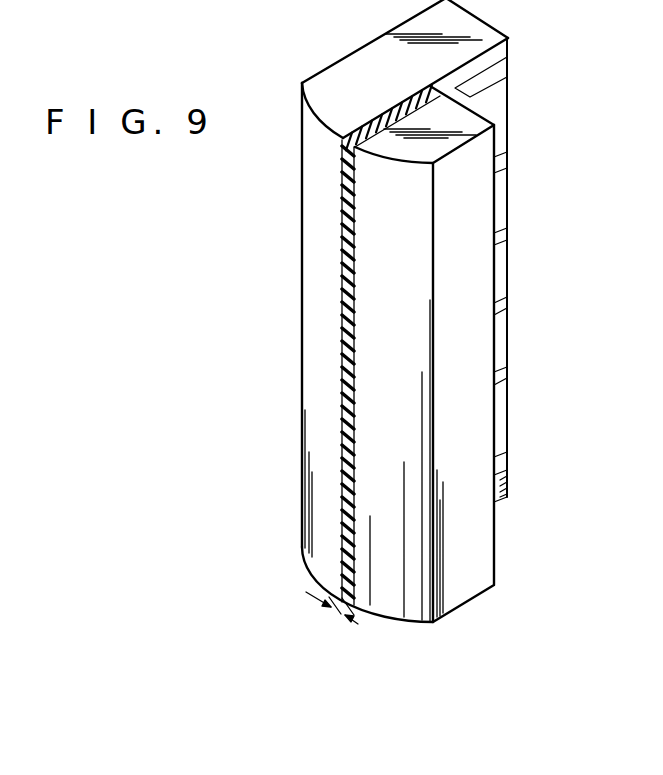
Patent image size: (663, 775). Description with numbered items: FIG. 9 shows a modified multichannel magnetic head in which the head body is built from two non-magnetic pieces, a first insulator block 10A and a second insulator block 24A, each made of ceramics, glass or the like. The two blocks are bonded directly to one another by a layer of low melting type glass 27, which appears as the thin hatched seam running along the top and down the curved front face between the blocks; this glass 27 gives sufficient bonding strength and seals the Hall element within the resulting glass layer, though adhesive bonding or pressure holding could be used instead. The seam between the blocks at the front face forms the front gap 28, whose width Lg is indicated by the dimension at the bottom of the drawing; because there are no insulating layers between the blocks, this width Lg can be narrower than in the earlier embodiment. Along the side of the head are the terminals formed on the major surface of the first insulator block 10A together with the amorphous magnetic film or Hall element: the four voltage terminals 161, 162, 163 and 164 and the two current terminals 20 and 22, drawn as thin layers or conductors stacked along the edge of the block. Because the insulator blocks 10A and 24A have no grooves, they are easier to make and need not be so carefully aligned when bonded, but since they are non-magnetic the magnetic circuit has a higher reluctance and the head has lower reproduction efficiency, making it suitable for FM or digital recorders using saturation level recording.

The first insulator block 10A is at (346, 64).
The low melting type glass 27 is at (403, 106).
The front gap 28 is at (340, 300).
The second insulator block 24A is at (470, 118).
The current terminal 20 is at (494, 78).
The voltage terminal 161 is at (496, 166).
The voltage terminal 162 is at (496, 237).
The voltage terminal 163 is at (496, 311).
The voltage terminal 164 is at (496, 379).
The current terminal 22 is at (496, 471).
The width of the front gap Lg is at (328, 606).